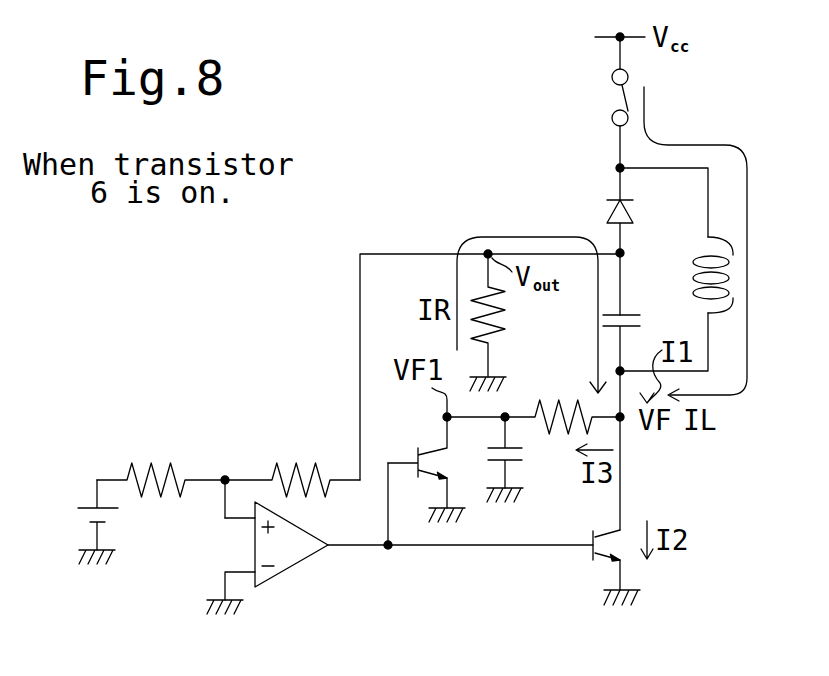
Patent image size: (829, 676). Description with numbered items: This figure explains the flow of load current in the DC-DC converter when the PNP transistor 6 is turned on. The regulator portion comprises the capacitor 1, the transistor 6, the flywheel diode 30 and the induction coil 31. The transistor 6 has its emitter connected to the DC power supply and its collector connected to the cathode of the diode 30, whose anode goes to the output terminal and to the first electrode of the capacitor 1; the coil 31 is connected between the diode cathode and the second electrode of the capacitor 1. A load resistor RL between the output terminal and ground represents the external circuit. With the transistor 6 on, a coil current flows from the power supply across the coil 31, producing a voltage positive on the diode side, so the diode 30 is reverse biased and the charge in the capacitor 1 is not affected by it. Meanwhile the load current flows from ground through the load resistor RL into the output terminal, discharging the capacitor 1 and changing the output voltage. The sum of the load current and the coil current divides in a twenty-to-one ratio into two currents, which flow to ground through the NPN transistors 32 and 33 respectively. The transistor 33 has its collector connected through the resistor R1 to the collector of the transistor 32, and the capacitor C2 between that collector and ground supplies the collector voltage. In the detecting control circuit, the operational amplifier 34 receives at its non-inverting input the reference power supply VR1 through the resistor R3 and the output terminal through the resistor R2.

The PNP transistor 6 is at (624, 88).
The flywheel diode 30 is at (628, 212).
The induction coil 31 is at (700, 258).
The capacitor 1 is at (633, 318).
The NPN transistor 32 is at (610, 560).
The NPN transistor 33 is at (432, 447).
The operational amplifier 34 is at (290, 567).
The resistor R1 is at (562, 410).
The resistor R2 is at (302, 460).
The resistor R3 is at (152, 470).
The load resistor RL is at (502, 300).
The capacitor C2 is at (520, 463).
The reference power supply VR1 is at (84, 500).